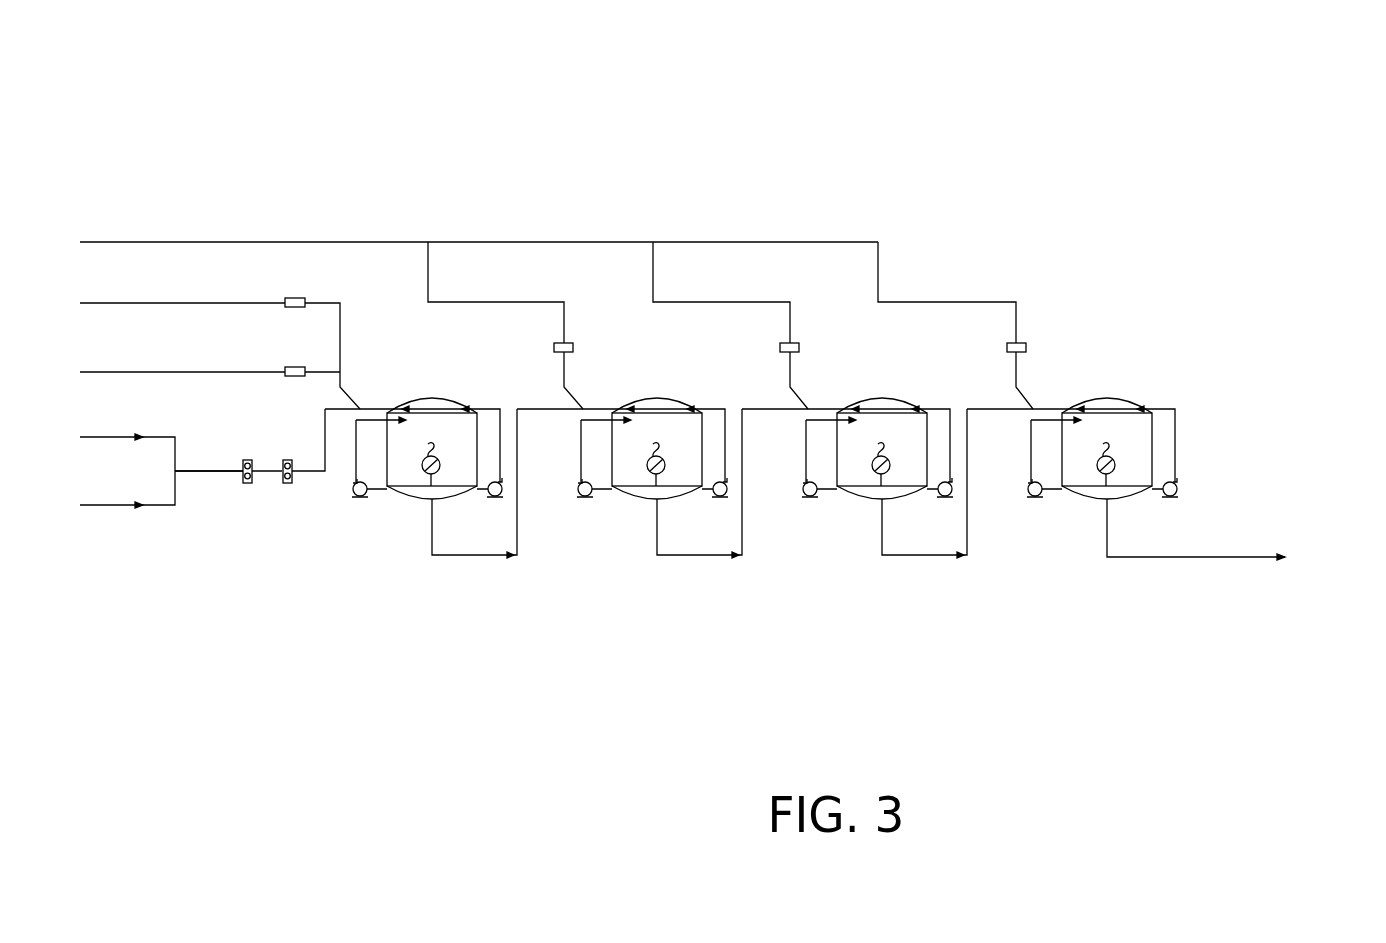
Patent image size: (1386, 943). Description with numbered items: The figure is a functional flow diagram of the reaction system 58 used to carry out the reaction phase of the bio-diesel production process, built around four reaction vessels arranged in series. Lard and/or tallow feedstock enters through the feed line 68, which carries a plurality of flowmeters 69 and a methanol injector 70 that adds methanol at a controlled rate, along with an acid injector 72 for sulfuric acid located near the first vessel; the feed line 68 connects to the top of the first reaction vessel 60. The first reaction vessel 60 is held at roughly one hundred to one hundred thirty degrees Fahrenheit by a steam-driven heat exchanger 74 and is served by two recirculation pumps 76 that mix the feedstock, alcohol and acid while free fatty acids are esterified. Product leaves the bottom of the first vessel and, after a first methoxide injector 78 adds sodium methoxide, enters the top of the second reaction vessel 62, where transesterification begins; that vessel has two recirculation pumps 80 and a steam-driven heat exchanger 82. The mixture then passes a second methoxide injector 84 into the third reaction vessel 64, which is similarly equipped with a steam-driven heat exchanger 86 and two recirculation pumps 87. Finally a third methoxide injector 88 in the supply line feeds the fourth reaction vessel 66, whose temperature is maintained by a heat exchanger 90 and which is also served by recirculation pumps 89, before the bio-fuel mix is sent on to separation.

The reaction system 58 is at (820, 150).
The first reaction vessel 60 is at (413, 499).
The second reaction vessel 62 is at (643, 530).
The third reaction vessel 64 is at (868, 530).
The fourth reaction vessel 66 is at (1093, 530).
The feed line 68 is at (222, 472).
The flowmeters 69 is at (247, 483).
The methanol injector 70 is at (285, 371).
The acid injector 72 is at (294, 298).
The steam-driven heat exchanger 74 is at (430, 478).
The recirculation pumps 76 is at (358, 497).
The first methoxide injector 78 is at (562, 343).
The recirculation pumps 80 is at (635, 586).
The steam-driven heat exchanger 82 is at (653, 556).
The second methoxide injector 84 is at (789, 343).
The steam-driven heat exchanger 86 is at (878, 556).
The recirculation pumps 87 is at (860, 586).
The third methoxide injector 88 is at (1012, 343).
The circulation pumps of fourth reactor 89 is at (1085, 586).
The heat exchanger 90 is at (1103, 556).